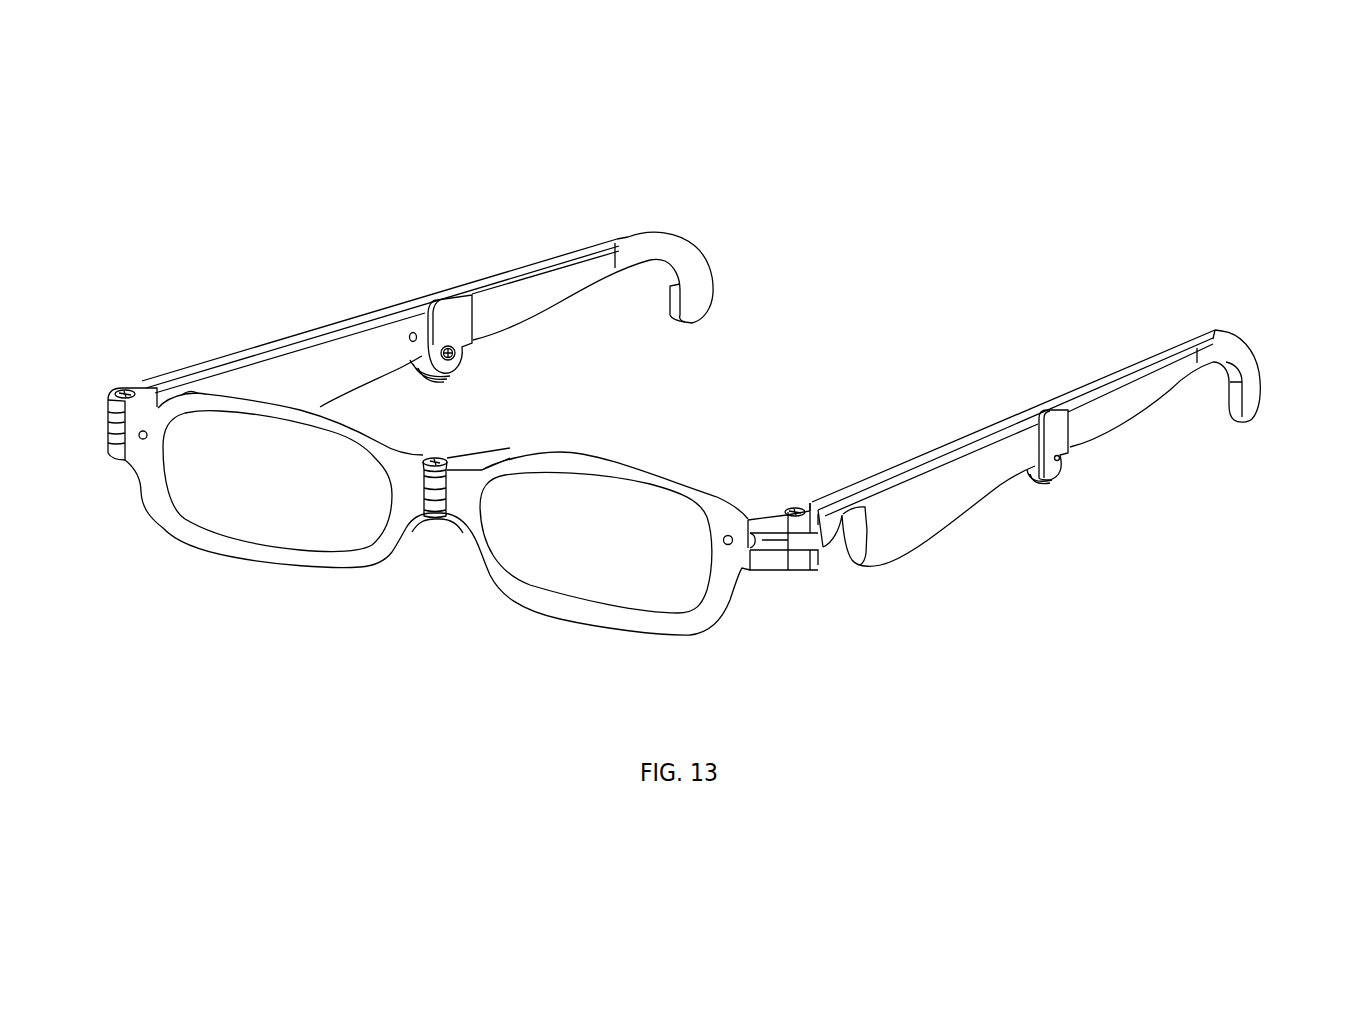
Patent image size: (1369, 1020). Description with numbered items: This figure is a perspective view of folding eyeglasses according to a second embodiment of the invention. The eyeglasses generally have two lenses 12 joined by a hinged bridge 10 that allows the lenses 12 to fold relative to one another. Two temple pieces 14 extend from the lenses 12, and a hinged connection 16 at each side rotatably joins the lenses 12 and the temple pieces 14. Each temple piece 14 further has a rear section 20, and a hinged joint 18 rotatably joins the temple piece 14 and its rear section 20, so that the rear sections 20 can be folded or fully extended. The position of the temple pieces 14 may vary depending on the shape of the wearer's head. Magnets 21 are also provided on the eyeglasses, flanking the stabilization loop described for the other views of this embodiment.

The hinged bridge 10 is at (446, 462).
The lenses 12 is at (583, 545).
The temple pieces 14 is at (292, 374).
The hinged connection 16 is at (125, 392).
The hinged joint 18 is at (465, 357).
The rear section 20 is at (619, 243).
The magnets 21 is at (143, 441).